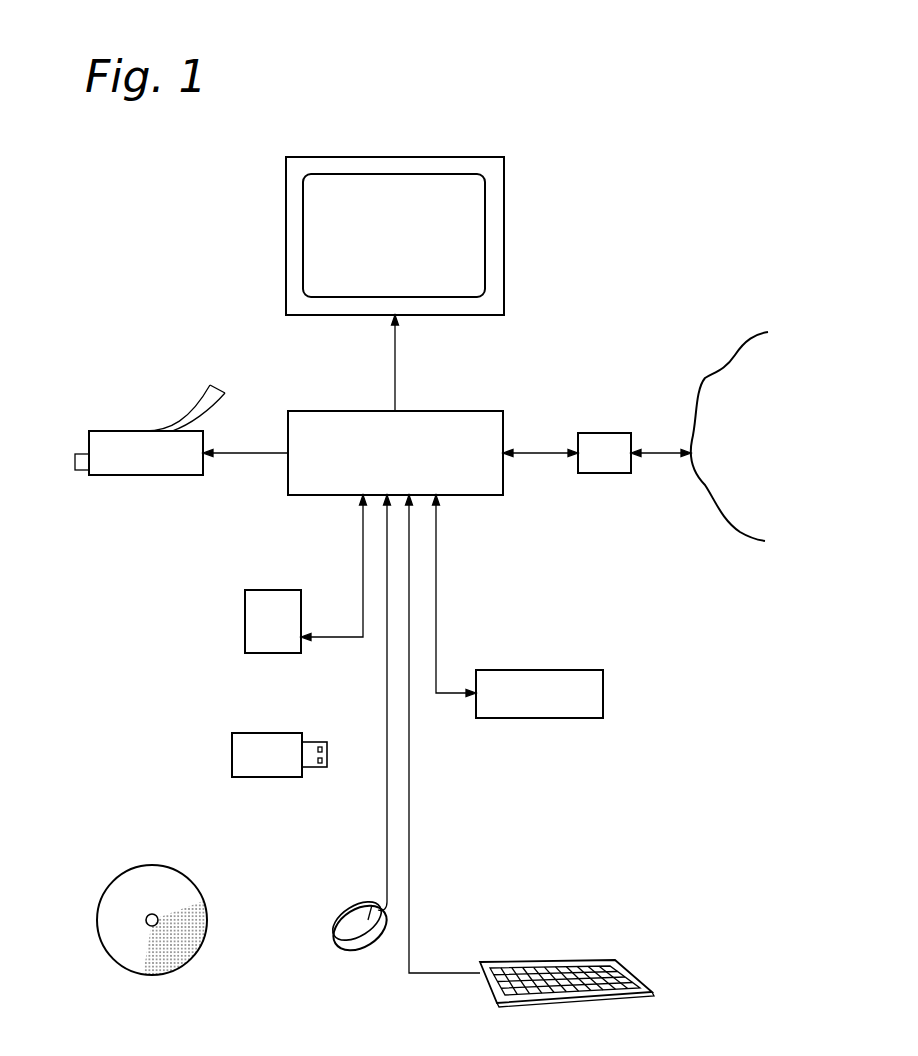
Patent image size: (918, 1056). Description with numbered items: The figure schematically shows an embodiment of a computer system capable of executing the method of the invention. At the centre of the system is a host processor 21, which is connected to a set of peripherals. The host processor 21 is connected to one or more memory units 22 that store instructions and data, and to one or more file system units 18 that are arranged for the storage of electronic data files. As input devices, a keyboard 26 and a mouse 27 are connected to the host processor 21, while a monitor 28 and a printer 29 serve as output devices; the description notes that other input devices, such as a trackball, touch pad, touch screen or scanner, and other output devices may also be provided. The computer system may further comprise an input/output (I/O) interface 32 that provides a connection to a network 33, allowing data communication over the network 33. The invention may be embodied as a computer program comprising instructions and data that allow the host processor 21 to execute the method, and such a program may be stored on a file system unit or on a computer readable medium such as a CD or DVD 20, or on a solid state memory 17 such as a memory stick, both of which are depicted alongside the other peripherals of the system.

The solid state memory 17 is at (243, 753).
The file system unit 18 is at (265, 597).
The DVD 20 is at (157, 878).
The host processor 21 is at (338, 420).
The memory unit 22 is at (597, 689).
The keyboard 26 is at (615, 968).
The mouse 27 is at (348, 912).
The monitor 28 is at (395, 190).
The printer 29 is at (143, 435).
The input/output (I/O) interface 32 is at (607, 437).
The network 33 is at (716, 408).